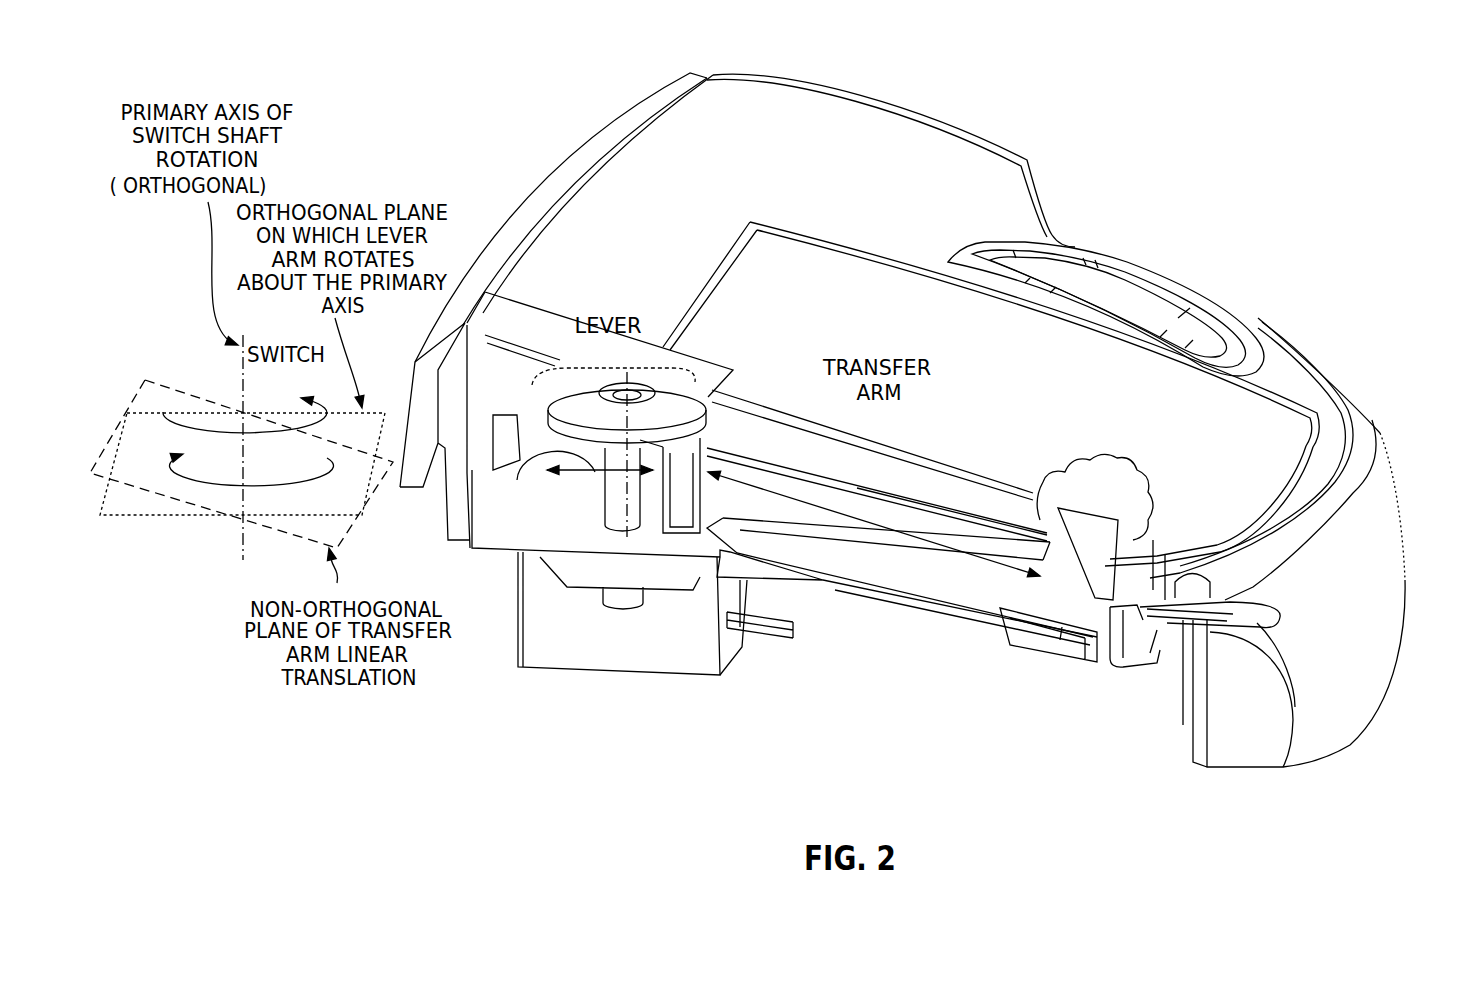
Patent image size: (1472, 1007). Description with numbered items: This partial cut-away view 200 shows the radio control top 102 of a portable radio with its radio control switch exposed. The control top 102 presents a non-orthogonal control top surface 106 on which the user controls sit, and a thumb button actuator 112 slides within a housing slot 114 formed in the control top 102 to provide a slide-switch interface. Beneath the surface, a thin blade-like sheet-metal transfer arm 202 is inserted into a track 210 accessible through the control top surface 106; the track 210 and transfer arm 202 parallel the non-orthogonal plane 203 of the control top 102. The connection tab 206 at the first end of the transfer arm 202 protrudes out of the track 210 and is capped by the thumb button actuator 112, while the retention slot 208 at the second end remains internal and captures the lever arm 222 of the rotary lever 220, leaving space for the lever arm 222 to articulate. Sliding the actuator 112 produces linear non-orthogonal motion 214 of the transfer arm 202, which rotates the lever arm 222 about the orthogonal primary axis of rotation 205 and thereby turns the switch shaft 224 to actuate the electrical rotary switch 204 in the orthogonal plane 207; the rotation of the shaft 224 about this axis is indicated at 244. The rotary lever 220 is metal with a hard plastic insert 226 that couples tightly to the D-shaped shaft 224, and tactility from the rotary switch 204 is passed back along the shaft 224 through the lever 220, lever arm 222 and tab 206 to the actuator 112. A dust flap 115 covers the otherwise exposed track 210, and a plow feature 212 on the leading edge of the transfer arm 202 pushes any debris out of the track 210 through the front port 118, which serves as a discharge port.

The radio control top 102 is at (1400, 540).
The non-orthogonal control top surface 106 is at (1243, 417).
The thumb button actuator 112 is at (1123, 468).
The housing slot 114 is at (995, 630).
The dust flap 115 is at (975, 515).
The front port 118 is at (1280, 618).
The switch assembly 200 is at (294, 62).
The transfer arm 202 is at (913, 560).
The non-orthogonal plane 203 is at (352, 528).
The electrical rotary switch 204 is at (615, 653).
The orthogonal primary axis of rotation 205 is at (243, 377).
The connection tab 206 is at (1085, 520).
The orthogonal plane 207 is at (158, 518).
The retention slot 208 is at (707, 522).
The track 210 is at (1052, 655).
The plow feature 212 is at (1112, 668).
The linear non-orthogonal motion 214 is at (855, 522).
The rotary lever 220 is at (619, 372).
The lever arm 222 is at (692, 465).
The switch shaft 224 is at (670, 360).
The plastic insert 226 is at (553, 383).
The shaft rotation direction 244 is at (569, 478).